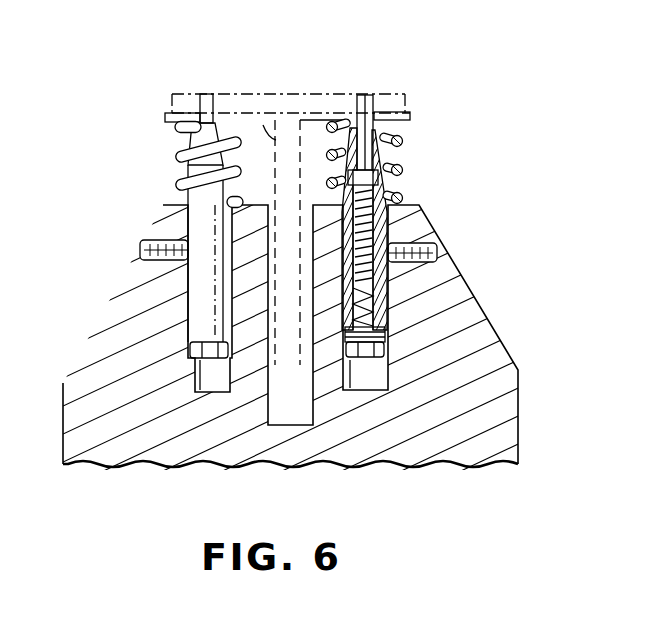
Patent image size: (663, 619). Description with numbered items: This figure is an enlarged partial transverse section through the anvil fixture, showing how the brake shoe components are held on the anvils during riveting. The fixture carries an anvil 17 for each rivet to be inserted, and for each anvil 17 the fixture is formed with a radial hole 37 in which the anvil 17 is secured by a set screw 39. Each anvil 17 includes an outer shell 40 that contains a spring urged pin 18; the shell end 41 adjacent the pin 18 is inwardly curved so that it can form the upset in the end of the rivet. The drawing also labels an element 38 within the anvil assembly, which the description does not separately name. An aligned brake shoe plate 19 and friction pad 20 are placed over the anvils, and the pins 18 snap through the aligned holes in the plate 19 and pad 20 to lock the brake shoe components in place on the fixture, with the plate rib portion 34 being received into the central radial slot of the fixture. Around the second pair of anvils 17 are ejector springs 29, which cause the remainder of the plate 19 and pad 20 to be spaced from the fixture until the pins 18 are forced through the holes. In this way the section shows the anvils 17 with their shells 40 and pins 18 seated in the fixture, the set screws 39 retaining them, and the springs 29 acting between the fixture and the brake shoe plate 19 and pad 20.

The anvil 17 is at (182, 132).
The spring urged pin 18 is at (208, 96).
The brake shoe plate 19 is at (165, 117).
The friction pad 20 is at (187, 90).
The ejector spring 29 is at (172, 158).
The plate rib portion 34 is at (262, 122).
The radial hole 37 is at (186, 195).
The bolt 38 is at (205, 312).
The set screw 39 is at (142, 248).
The outer shell 40 is at (188, 170).
The shell end 41 is at (388, 130).